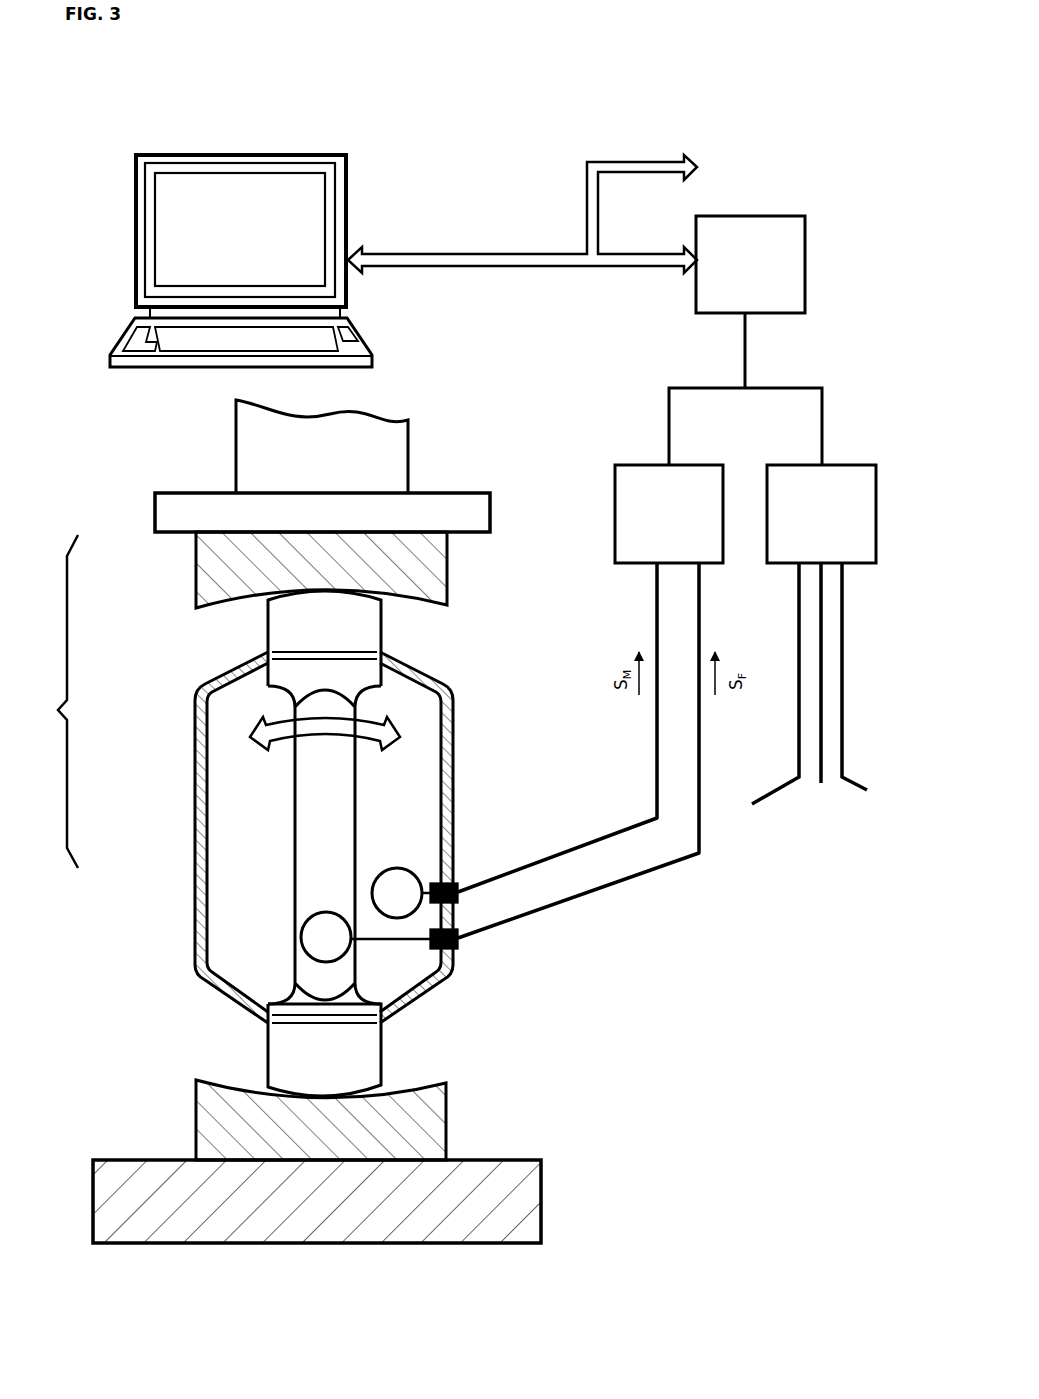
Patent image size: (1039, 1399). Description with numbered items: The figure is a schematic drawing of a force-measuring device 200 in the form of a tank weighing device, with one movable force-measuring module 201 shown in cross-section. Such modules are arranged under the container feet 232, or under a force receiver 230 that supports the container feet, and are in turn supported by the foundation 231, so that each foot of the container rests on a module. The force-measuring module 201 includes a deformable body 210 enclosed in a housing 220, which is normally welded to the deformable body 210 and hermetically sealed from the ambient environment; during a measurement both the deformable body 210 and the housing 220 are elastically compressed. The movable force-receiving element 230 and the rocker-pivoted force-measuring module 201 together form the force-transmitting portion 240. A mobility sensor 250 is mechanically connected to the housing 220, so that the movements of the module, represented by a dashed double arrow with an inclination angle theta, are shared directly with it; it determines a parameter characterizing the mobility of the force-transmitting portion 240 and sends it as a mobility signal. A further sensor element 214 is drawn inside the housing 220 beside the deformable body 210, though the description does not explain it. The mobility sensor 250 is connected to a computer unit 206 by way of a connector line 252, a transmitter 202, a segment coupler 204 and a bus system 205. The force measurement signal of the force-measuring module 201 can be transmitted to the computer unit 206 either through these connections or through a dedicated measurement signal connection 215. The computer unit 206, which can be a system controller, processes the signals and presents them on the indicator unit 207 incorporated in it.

The force-measuring device 200 is at (786, 1111).
The movable force-measuring module 201 is at (466, 1000).
The transmitter 202 is at (745, 596).
The segment coupler 204 is at (750, 302).
The bus system 205 is at (502, 258).
The computer unit 206 is at (260, 146).
The indicator unit 207 is at (174, 216).
The deformable body 210 is at (323, 808).
The sensor 214 is at (317, 947).
The measurement signal connection 215 is at (630, 878).
The housing 220 is at (200, 868).
The force receiver 230 is at (193, 508).
The foundation 231 is at (313, 1218).
The container foot 232 is at (305, 471).
The force-transmitting portion 240 is at (46, 701).
The mobility sensor 250 is at (407, 877).
The connector line 252 is at (605, 835).